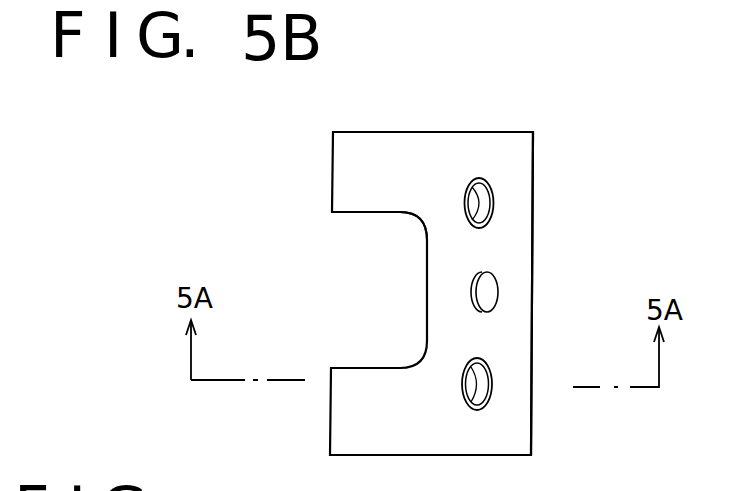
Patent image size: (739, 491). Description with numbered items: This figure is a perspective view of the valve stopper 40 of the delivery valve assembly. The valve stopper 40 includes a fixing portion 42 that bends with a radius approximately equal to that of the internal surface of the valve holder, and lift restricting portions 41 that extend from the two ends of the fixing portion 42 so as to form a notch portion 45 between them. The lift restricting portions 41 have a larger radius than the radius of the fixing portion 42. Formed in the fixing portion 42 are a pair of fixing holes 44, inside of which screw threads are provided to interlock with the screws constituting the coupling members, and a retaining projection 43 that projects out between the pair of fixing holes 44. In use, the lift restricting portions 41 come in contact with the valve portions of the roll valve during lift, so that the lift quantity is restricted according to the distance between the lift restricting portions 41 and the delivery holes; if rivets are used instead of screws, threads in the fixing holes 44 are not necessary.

The valve stopper 40 is at (466, 147).
The lift restricting portion 41 is at (349, 433).
The fixing portion 42 is at (515, 437).
The retaining projection 43 is at (492, 292).
The fixing hole 44 is at (484, 206).
The notch portion 45 is at (380, 212).